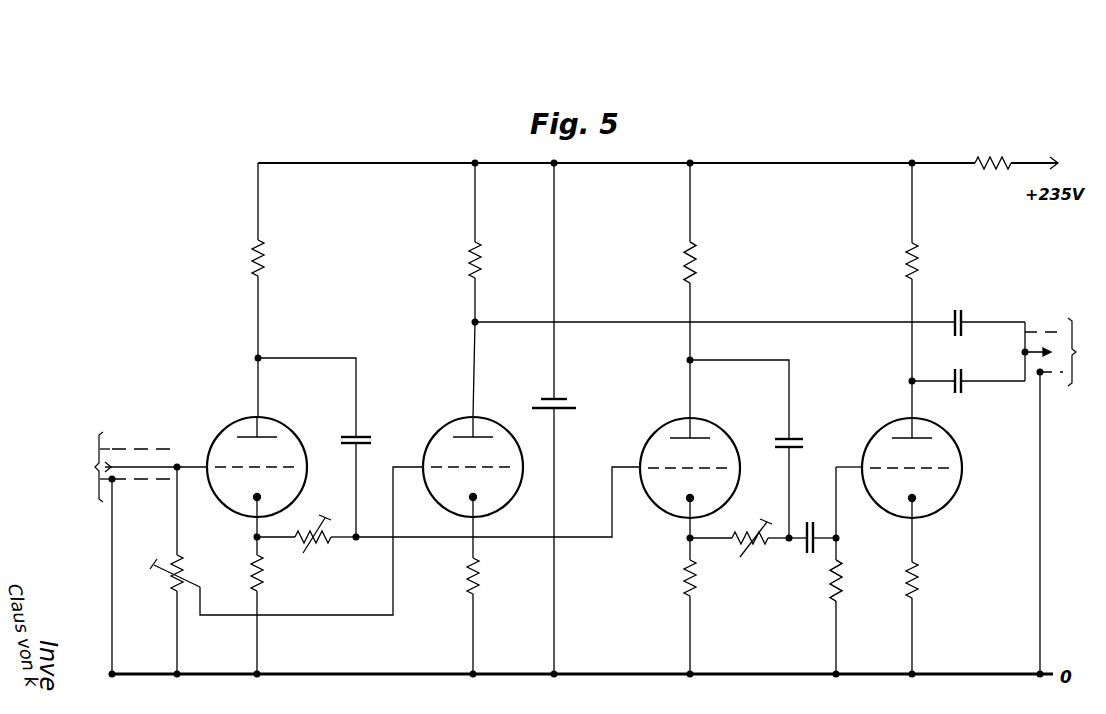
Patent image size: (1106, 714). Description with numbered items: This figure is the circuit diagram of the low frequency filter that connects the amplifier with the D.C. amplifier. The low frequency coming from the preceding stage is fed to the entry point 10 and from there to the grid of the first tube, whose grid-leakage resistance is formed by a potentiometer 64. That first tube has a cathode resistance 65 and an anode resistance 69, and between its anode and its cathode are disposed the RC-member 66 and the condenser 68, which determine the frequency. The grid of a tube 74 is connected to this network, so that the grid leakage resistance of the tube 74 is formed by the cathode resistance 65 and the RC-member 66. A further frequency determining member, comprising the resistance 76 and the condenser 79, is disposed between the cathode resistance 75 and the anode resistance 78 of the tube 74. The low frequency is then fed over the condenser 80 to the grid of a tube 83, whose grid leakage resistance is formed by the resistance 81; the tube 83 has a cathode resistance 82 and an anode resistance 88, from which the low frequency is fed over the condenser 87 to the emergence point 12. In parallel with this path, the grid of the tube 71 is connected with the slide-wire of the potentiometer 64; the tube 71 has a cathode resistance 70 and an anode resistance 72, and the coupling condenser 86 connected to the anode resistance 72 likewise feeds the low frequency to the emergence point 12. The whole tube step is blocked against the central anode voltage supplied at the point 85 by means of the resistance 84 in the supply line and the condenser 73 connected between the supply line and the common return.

The entry point 10 is at (107, 553).
The emergence point 12 is at (1061, 496).
The potentiometer 64 is at (172, 590).
The cathode resistance 65 is at (300, 480).
The RC-member 66 is at (330, 540).
The condenser 68 is at (364, 447).
The anode resistance 69 is at (262, 270).
The cathode resistance 70 is at (477, 588).
The tube 71 is at (507, 498).
The anode resistance 72 is at (479, 272).
The condenser 73 is at (568, 411).
The tube 74 is at (730, 480).
The cathode resistance 75 is at (694, 590).
The resistance 76 is at (736, 544).
The anode resistance 78 is at (694, 278).
The condenser 79 is at (797, 450).
The condenser 80 is at (806, 553).
The resistance 81 is at (840, 594).
The cathode resistance 82 is at (916, 590).
The tube 83 is at (948, 488).
The resistance 84 is at (982, 170).
The point 85 is at (1058, 168).
The coupling condenser 86 is at (953, 312).
The condenser 87 is at (963, 391).
The anode resistance 88 is at (916, 246).